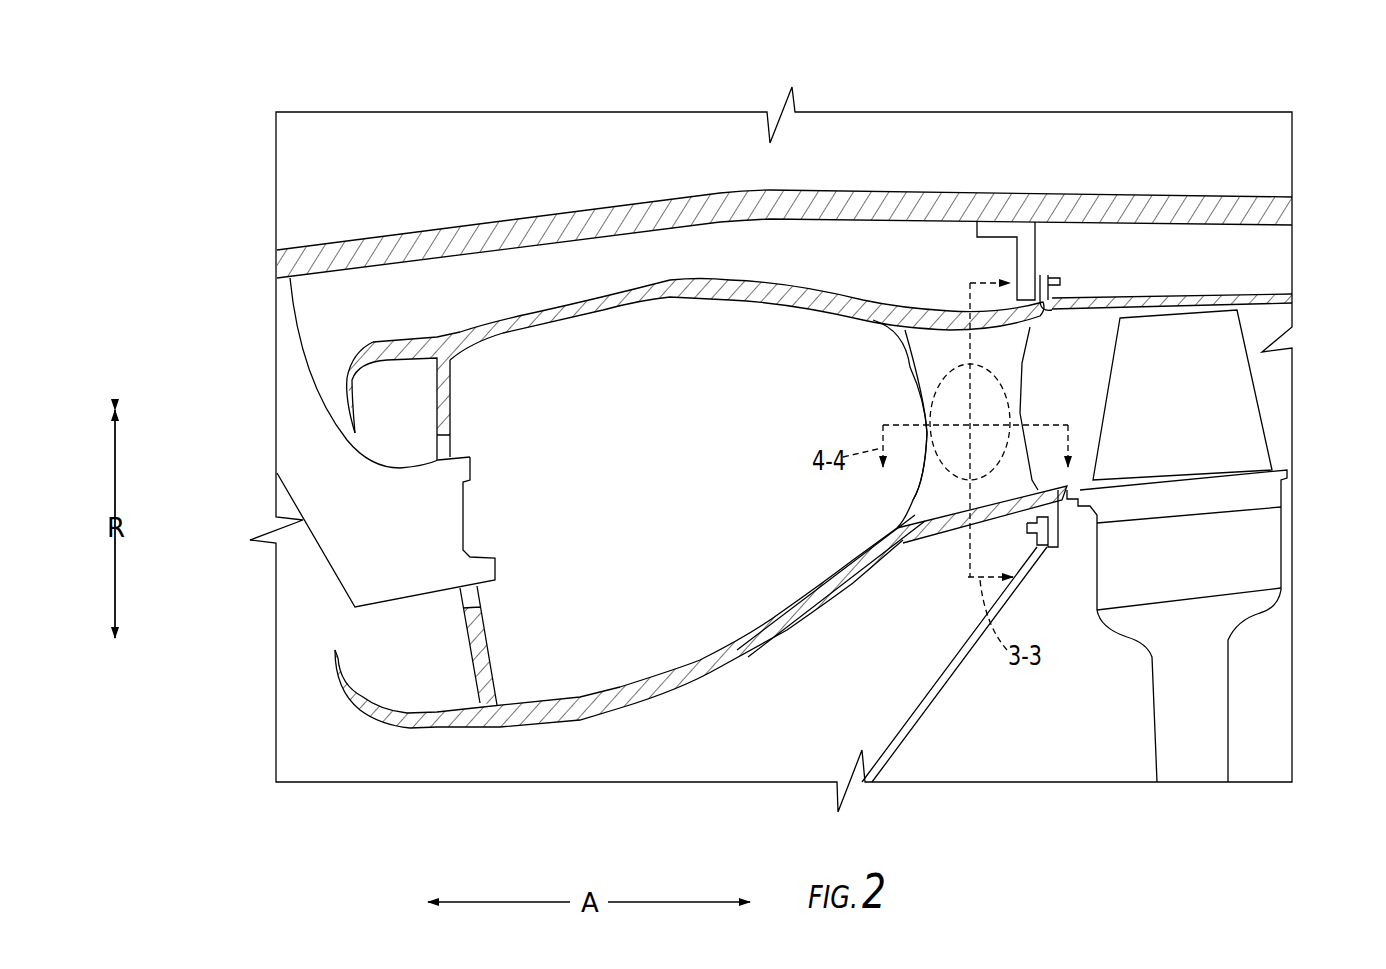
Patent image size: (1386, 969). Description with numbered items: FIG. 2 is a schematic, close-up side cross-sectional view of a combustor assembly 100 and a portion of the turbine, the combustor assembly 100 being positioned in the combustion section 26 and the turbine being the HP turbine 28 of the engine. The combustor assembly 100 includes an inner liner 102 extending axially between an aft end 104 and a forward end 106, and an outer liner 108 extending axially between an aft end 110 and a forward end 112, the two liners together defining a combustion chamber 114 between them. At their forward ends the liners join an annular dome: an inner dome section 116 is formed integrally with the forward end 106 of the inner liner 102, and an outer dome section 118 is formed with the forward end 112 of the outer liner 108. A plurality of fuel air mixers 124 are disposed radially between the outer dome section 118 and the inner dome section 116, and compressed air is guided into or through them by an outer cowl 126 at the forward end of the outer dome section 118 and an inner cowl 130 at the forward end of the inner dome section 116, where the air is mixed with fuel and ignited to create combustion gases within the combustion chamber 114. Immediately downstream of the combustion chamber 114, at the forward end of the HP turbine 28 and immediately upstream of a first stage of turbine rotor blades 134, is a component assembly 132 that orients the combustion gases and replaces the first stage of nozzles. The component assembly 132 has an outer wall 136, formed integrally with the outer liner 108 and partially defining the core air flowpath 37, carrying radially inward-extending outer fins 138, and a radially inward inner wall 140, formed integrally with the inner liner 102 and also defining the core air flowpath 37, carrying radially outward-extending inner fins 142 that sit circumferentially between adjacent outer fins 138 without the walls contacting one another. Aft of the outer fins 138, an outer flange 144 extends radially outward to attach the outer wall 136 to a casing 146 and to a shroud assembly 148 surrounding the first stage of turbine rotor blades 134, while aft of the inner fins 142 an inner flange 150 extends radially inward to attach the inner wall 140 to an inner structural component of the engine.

The combustion section 26 is at (985, 135).
The HP turbine 28 is at (1172, 253).
The core air flowpath 37 is at (1073, 401).
The combustor assembly 100 is at (803, 245).
The inner liner 102 is at (697, 673).
The aft end 104 is at (883, 570).
The forward end 106 is at (497, 735).
The outer liner 108 is at (695, 280).
The aft end 110 is at (853, 283).
The forward end 112 is at (472, 322).
The combustion chamber 114 is at (667, 496).
The inner dome section 116 is at (335, 697).
The outer dome section 118 is at (333, 350).
The fuel air mixers 124 is at (347, 557).
The outer cowl 126 is at (350, 378).
The inner cowl 130 is at (360, 717).
The component assembly 132 is at (978, 265).
The first stage of turbine rotor blades 134 is at (1210, 340).
The outer wall 136 is at (932, 320).
The outer fins 138 is at (923, 373).
The inner wall 140 is at (920, 530).
The inner fins 142 is at (923, 483).
The outer flange 144 is at (1040, 285).
The casing 146 is at (1087, 198).
The shroud assembly 148 is at (1213, 297).
The inner flange 150 is at (1057, 549).